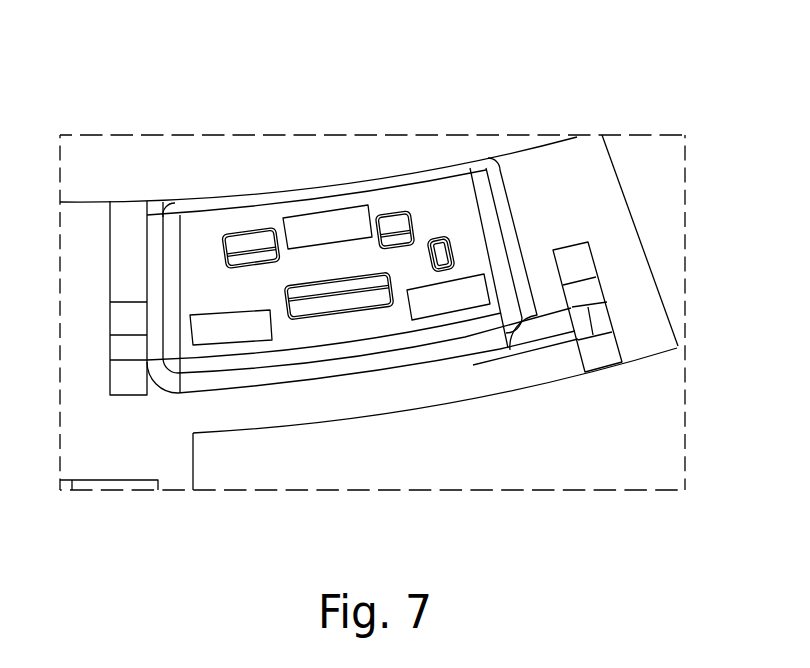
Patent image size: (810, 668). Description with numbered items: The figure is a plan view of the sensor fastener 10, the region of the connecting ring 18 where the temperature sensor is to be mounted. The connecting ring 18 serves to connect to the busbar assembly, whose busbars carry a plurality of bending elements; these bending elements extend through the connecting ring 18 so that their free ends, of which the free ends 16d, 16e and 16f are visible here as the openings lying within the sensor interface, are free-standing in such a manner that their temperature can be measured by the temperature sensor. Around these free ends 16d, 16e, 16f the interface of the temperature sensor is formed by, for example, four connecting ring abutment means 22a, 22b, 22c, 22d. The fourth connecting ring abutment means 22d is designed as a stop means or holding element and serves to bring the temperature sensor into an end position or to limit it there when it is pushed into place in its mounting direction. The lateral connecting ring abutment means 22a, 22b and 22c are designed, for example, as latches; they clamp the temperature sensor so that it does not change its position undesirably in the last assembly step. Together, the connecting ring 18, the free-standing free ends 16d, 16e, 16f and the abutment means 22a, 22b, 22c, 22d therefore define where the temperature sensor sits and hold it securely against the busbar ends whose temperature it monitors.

The steering wheel 10 is at (83, 104).
The free end 16d is at (463, 297).
The free end 16e is at (342, 223).
The free end 16f is at (220, 327).
The connecting ring 18 is at (643, 290).
The connecting ring abutment means 22a is at (256, 232).
The connecting ring abutment means 22b is at (345, 303).
The connecting ring abutment means 22c is at (400, 218).
The connecting ring abutment means 22d is at (437, 233).